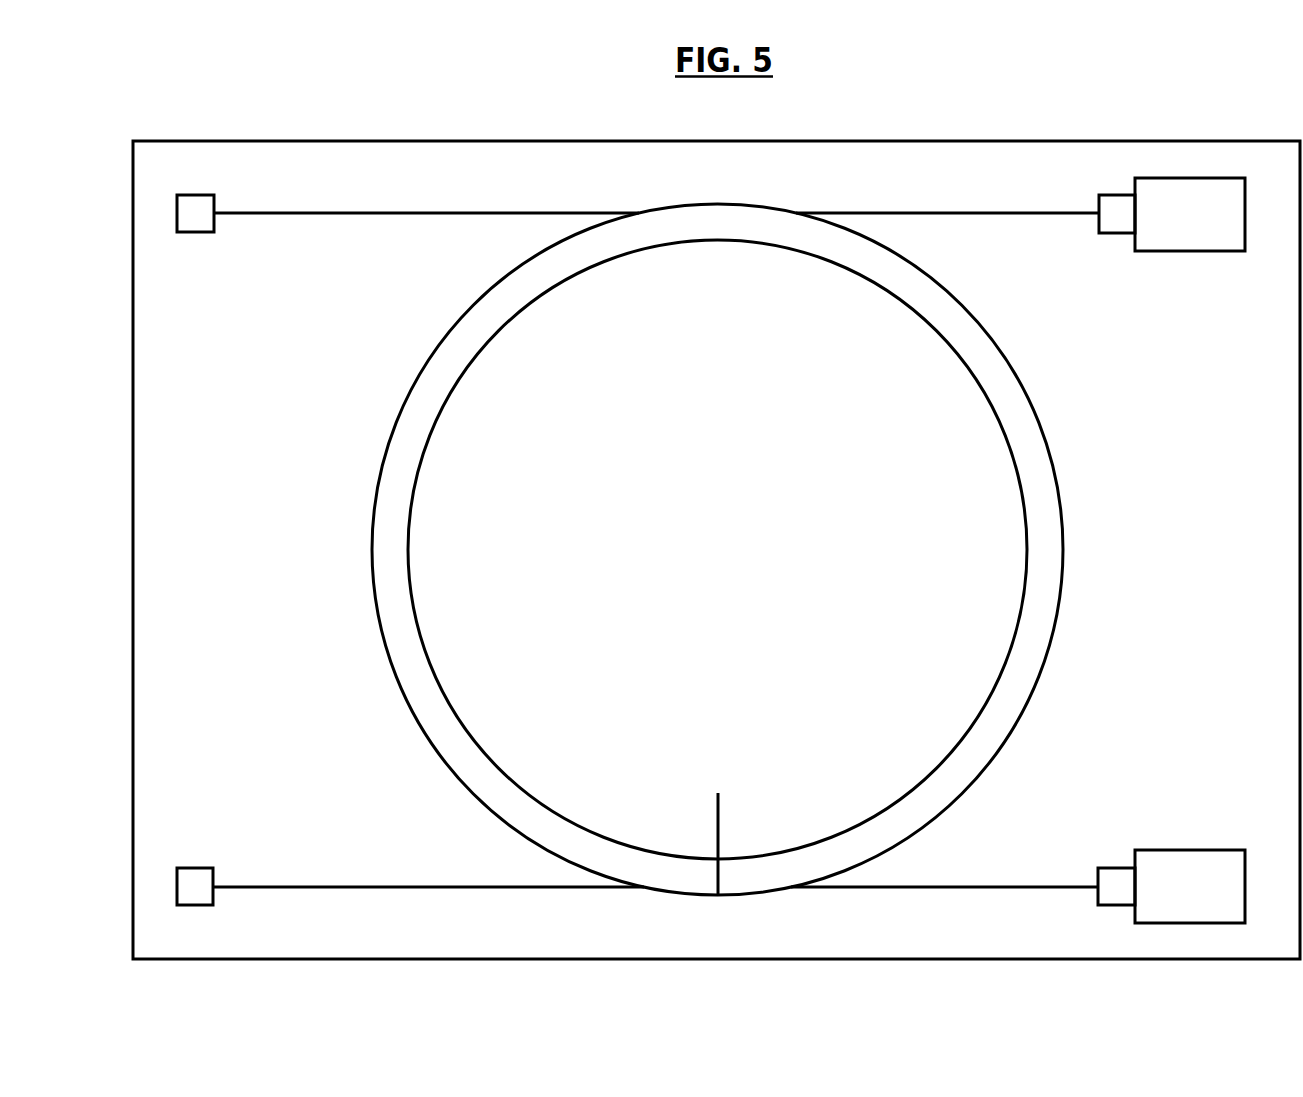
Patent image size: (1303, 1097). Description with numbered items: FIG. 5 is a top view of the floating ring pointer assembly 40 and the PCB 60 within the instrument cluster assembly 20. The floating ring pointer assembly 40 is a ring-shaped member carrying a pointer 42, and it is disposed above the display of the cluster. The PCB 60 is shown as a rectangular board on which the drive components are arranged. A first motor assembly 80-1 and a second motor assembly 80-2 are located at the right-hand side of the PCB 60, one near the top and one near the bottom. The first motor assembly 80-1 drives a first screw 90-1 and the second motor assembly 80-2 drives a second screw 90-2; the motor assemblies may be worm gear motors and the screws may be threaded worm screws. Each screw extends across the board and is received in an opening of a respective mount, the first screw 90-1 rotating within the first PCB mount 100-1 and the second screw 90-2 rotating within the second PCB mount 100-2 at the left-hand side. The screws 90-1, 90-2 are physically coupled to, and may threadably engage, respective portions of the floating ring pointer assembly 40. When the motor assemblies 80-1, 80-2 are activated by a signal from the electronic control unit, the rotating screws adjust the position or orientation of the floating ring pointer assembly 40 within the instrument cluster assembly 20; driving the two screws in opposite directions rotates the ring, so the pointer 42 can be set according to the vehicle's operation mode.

The instrument cluster assembly 20 is at (192, 92).
The floating ring pointer assembly 40 is at (1020, 378).
The pointer 42 is at (720, 823).
The PCB 60 is at (935, 141).
The first motor assembly 80-1 is at (1192, 178).
The second motor assembly 80-2 is at (1190, 850).
The first screw 90-1 is at (972, 213).
The second screw 90-2 is at (1010, 887).
The first PCB mount 100-1 is at (215, 196).
The second PCB mount 100-2 is at (213, 868).